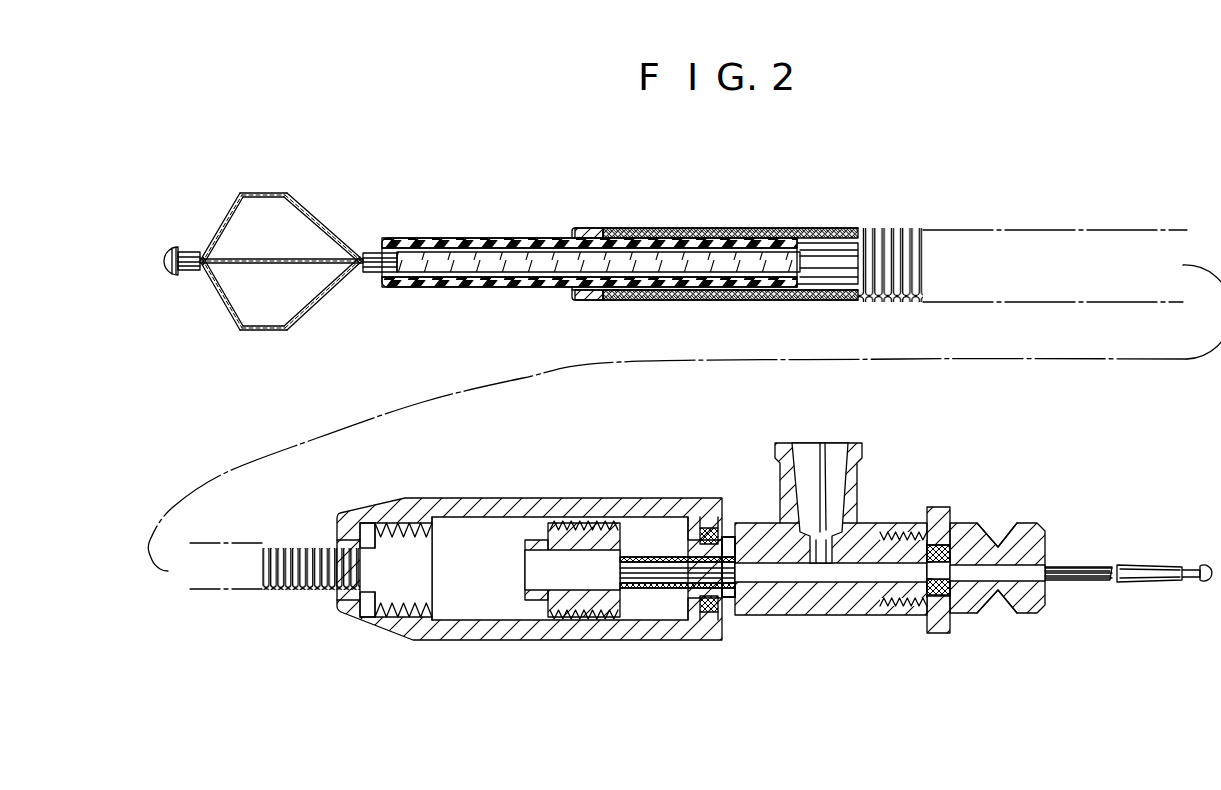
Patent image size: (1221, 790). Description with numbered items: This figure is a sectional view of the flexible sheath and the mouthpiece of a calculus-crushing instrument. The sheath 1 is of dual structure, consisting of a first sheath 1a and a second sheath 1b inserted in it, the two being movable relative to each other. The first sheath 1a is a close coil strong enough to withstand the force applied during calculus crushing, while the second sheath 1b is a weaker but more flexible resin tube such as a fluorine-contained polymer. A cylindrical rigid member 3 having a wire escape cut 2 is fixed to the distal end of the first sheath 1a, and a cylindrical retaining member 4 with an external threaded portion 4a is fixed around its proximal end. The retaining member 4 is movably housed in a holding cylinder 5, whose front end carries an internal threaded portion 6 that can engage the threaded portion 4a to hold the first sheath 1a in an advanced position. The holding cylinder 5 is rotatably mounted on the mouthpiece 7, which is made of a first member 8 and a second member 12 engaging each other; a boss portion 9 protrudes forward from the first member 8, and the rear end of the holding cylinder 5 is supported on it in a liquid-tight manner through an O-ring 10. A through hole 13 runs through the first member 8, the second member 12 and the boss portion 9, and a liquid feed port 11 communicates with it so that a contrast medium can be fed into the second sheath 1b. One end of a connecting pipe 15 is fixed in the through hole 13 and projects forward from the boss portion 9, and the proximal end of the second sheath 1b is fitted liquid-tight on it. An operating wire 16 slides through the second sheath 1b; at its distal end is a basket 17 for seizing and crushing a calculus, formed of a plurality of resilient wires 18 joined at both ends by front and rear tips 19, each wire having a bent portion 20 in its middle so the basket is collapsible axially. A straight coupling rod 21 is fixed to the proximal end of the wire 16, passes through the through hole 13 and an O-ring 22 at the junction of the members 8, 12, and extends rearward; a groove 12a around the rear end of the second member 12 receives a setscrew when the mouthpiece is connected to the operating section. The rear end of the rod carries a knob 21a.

The sheath 1 is at (846, 192).
The first sheath 1a is at (746, 228).
The second sheath 1b is at (512, 288).
The wire escape cut 2 is at (576, 228).
The cylindrical rigid member 3 is at (612, 228).
The cylindrical retaining member 4 is at (572, 570).
The external threaded portion 4a is at (582, 523).
The holding cylinder 5 is at (641, 498).
The internal threaded portion 6 is at (407, 530).
The mouthpiece 7 is at (701, 549).
The first member 8 is at (831, 593).
The boss portion 9 is at (730, 598).
The O-ring 10 is at (713, 612).
The liquid feed port 11 is at (836, 443).
The second member 12 is at (1001, 595).
The groove 12a is at (1000, 614).
The through hole 13 is at (797, 576).
The connecting pipe 15 is at (638, 590).
The operating wire 16 is at (720, 268).
The basket 17 is at (276, 259).
The resilient wires 18 is at (322, 210).
The front and rear tips 19 is at (212, 332).
The bent portions 20 is at (285, 190).
The coupling rod 21 is at (1078, 580).
The handle knob 21a is at (1186, 582).
The O-ring 22 is at (946, 545).